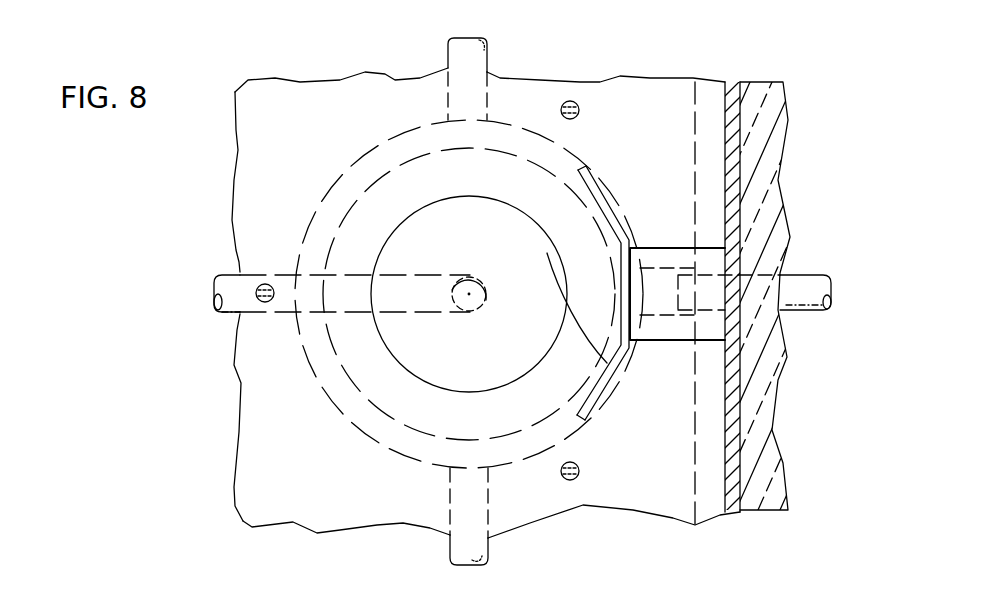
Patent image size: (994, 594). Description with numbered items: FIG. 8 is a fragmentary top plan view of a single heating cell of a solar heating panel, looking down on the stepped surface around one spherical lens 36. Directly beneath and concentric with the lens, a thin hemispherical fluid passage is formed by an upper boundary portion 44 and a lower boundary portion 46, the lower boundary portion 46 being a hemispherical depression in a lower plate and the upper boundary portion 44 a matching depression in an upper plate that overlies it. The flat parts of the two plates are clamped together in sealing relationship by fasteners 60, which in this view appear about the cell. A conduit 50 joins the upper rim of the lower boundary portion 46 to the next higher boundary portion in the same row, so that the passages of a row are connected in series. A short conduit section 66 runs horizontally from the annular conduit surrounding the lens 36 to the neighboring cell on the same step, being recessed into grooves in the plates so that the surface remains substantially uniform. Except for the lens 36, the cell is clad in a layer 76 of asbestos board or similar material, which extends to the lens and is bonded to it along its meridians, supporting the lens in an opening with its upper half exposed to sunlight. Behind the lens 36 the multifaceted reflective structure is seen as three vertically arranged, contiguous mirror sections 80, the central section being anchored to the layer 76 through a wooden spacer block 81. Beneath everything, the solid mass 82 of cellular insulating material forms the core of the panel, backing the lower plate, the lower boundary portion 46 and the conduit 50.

The spherical lens 36 is at (398, 357).
The upper boundary portion 44 is at (420, 432).
The lower boundary portion 46 is at (367, 437).
The conduit 50 is at (227, 278).
The fastener 60 is at (264, 283).
The short conduit section 66 is at (484, 55).
The layer 76 is at (322, 104).
The mirror section 80 is at (620, 279).
The spacer block 81 is at (658, 250).
The solid mass 82 is at (770, 88).